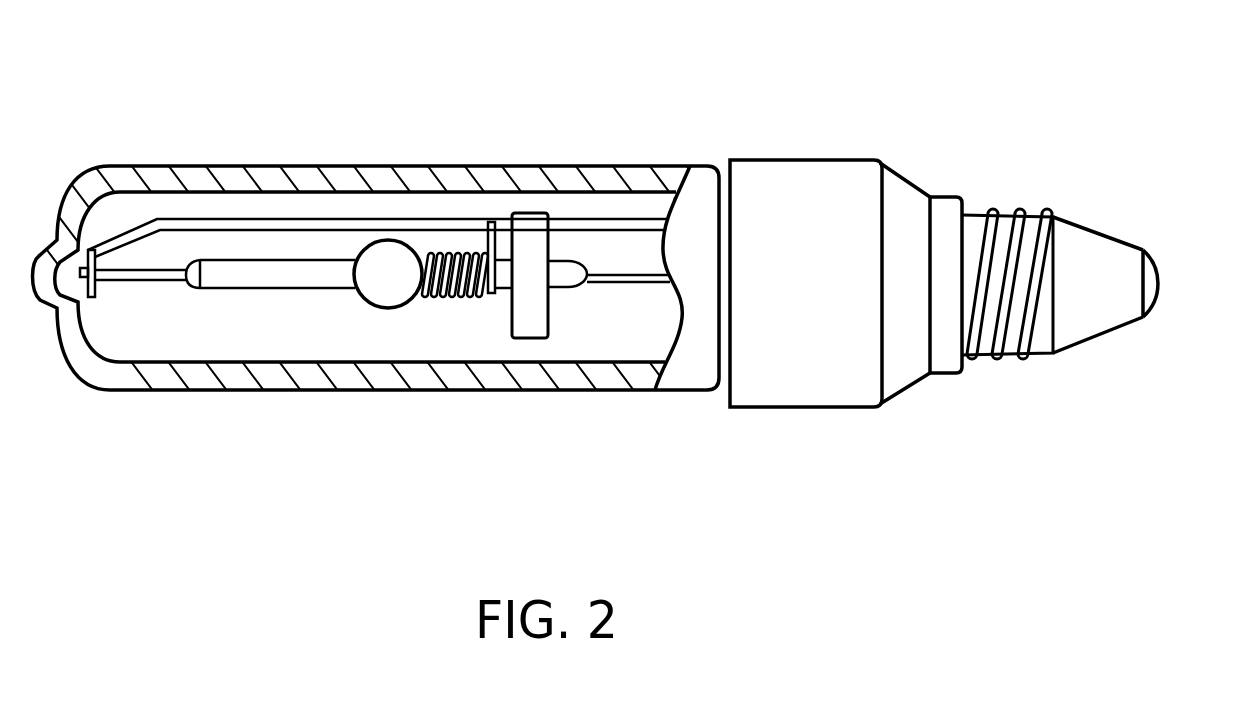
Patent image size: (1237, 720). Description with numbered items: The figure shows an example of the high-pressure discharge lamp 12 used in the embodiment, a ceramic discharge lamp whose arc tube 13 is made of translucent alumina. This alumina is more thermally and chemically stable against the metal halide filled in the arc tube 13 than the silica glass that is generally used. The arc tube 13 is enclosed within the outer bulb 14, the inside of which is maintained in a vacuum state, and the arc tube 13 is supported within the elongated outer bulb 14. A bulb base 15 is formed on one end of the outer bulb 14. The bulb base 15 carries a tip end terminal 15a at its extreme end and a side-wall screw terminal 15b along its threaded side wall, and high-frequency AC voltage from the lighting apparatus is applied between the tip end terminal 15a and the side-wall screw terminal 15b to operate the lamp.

The high-pressure discharge lamp 12 is at (576, 96).
The arc tube 13 is at (387, 291).
The outer bulb 14 is at (523, 383).
The bulb base 15 is at (812, 160).
The tip end terminal 15a is at (1158, 272).
The side-wall screw terminal 15b is at (1007, 216).